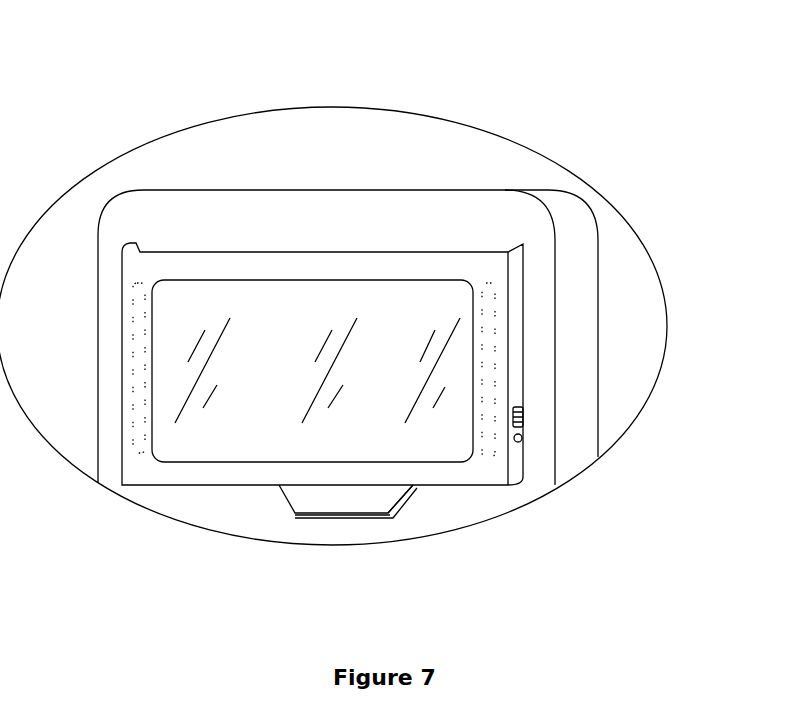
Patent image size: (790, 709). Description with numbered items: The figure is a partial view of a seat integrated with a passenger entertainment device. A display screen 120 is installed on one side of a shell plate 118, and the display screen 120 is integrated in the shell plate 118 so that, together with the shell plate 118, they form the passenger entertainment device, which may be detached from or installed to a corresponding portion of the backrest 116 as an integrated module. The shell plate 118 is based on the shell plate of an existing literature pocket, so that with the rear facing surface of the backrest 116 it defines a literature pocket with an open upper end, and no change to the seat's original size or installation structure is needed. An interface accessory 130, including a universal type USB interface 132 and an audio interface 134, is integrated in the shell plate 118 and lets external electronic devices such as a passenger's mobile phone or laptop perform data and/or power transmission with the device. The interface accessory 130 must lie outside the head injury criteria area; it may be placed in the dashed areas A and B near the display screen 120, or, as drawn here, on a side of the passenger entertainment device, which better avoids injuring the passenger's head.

The backrest 116 is at (450, 220).
The shell plate 118 is at (488, 277).
The display screen 120 is at (380, 430).
The interface accessory 130 is at (632, 429).
The USB interface 132 is at (523, 418).
The audio interface 134 is at (523, 437).